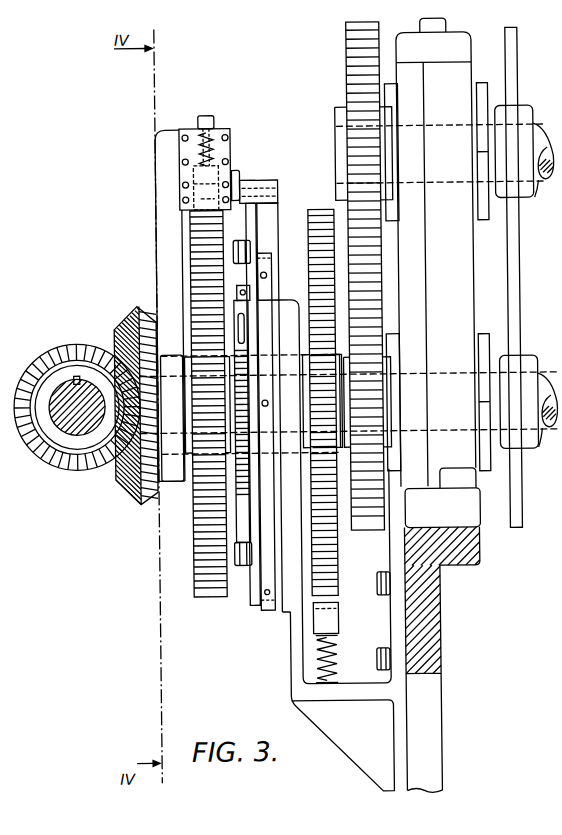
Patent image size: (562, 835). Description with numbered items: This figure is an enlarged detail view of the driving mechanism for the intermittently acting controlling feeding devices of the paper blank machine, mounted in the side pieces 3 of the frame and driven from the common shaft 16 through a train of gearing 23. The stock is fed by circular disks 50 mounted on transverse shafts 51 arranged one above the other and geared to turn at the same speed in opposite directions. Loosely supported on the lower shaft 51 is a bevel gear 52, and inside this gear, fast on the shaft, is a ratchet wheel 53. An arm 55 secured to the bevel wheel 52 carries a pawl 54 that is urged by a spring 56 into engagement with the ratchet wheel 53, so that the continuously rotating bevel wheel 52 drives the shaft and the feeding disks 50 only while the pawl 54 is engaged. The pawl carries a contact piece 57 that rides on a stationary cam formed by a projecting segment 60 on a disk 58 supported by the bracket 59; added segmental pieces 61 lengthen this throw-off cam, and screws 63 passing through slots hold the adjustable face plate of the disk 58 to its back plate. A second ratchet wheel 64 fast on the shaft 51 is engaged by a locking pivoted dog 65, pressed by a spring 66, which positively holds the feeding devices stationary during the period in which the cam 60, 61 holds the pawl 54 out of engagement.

The side pieces 3 is at (428, 583).
The common shaft 16 is at (68, 415).
The train of gearing 23 is at (372, 261).
The circular disks 50 is at (519, 249).
The transverse shafts 51 is at (545, 189).
The bevel gear 52 is at (113, 343).
The ratchet wheel 53 is at (207, 594).
The pawl 54 is at (180, 201).
The arm 55 is at (170, 246).
The spring 56 is at (234, 151).
The contact piece 57 is at (268, 182).
The disk 58 is at (268, 227).
The bracket 59 is at (288, 603).
The projecting segment 60 is at (252, 231).
The segmental pieces 61 is at (253, 293).
The screws 63 is at (241, 566).
The ratchet wheel 64 is at (332, 540).
The locking pivoted dog 65 is at (330, 615).
The spring 66 is at (332, 662).